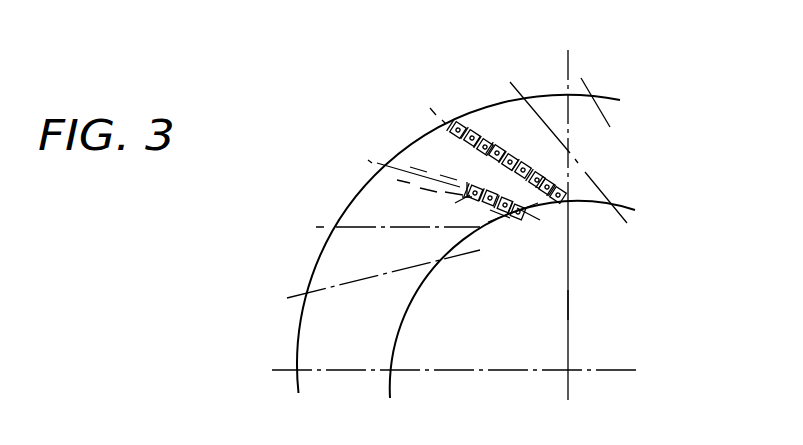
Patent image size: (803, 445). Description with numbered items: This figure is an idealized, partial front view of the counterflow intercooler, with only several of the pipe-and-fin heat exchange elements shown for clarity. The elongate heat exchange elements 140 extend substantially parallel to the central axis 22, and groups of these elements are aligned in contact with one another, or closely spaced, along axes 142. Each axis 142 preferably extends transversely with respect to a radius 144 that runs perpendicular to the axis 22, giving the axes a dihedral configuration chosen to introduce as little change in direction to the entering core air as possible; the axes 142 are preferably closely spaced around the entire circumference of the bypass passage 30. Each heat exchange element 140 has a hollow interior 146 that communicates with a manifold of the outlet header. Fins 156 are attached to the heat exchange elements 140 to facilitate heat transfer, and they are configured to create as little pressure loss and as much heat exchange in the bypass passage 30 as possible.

The axis 22 is at (568, 371).
The bypass passage 30 is at (320, 262).
The heat exchange element 140 is at (488, 120).
The axis 142 is at (340, 227).
The radius 144 is at (570, 307).
The hollow interior 146 is at (470, 198).
The fin 156 is at (471, 125).